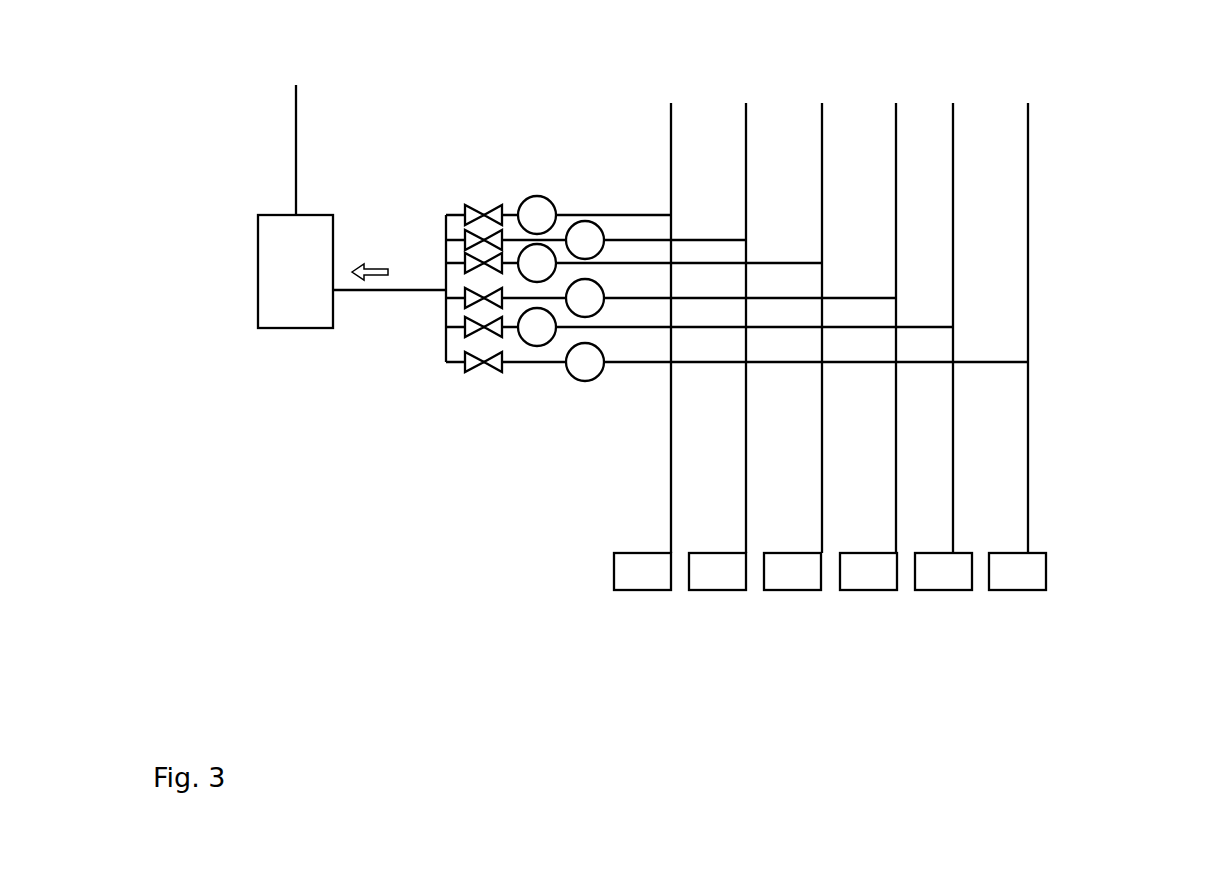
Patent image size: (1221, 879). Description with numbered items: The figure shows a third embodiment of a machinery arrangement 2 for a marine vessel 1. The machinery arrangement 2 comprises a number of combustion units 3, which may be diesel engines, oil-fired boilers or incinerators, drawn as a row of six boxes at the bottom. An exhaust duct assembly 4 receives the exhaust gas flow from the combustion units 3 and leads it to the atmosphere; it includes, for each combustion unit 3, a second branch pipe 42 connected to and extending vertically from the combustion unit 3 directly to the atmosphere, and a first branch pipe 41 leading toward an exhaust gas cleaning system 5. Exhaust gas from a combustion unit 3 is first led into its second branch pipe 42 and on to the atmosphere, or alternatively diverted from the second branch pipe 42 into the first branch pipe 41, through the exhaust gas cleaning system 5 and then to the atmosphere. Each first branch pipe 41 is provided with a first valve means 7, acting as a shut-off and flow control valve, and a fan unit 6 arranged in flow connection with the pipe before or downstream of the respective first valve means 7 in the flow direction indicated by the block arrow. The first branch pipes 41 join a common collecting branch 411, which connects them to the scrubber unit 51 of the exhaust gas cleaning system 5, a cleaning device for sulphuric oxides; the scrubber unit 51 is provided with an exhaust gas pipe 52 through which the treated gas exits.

The marine vessel 1 is at (1188, 54).
The machinery arrangement 2 is at (906, 355).
The combustion unit 3 is at (638, 573).
The exhaust duct assembly 4 is at (680, 308).
The first branch pipe 41 is at (613, 215).
The common collecting branch 411 is at (416, 292).
The second branch pipe 42 is at (672, 125).
The exhaust gas cleaning system 5 is at (270, 244).
The scrubber unit 51 is at (271, 277).
The exhaust gas pipe 52 is at (294, 135).
The fan unit 6 is at (530, 205).
The first valve means 7 is at (467, 210).